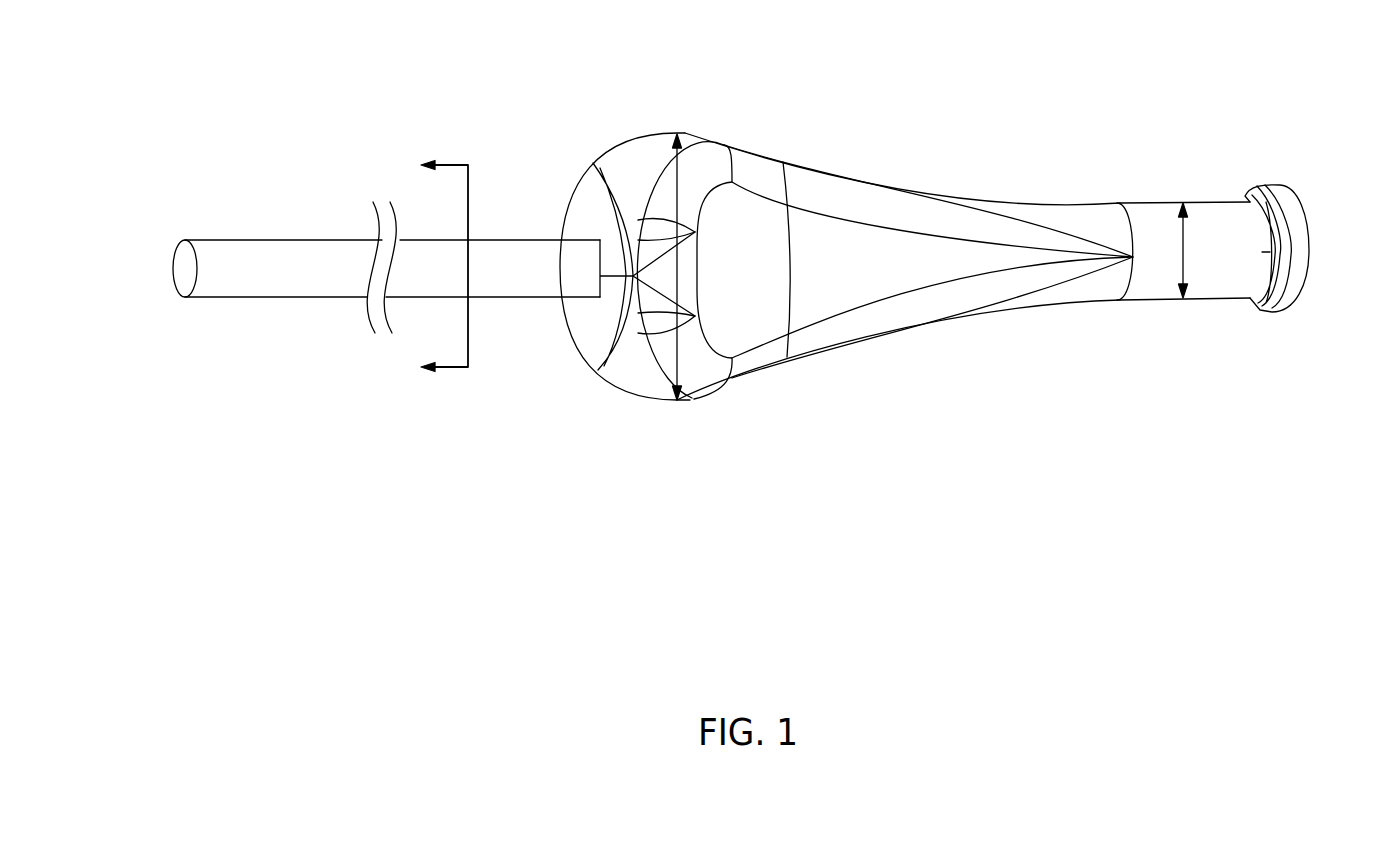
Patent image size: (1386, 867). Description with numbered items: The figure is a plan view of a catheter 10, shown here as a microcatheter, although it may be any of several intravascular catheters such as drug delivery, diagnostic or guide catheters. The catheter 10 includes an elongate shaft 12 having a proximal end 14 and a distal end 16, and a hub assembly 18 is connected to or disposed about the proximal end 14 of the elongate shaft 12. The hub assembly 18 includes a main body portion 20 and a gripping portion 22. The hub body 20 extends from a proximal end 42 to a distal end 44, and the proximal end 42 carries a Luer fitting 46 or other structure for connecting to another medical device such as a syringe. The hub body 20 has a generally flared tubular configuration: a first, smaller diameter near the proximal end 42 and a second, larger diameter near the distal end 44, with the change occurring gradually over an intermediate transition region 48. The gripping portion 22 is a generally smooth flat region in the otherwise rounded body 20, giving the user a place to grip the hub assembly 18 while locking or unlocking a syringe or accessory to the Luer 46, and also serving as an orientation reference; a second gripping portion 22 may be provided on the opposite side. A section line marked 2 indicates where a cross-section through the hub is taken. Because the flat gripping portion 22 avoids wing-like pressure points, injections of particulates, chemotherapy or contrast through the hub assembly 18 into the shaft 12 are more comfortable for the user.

The catheter 10 is at (350, 60).
The elongate shaft 12 is at (272, 298).
The proximal end 14 is at (588, 308).
The distal end 16 is at (184, 232).
The hub assembly 18 is at (757, 97).
The main body portion 20 is at (1148, 295).
The gripping portion 22 is at (741, 314).
The proximal end 42 is at (1305, 265).
The distal end 44 is at (592, 208).
The Luer fitting 46 is at (1297, 203).
The transition region 48 is at (910, 185).
The section line 2- 2 is at (435, 267).